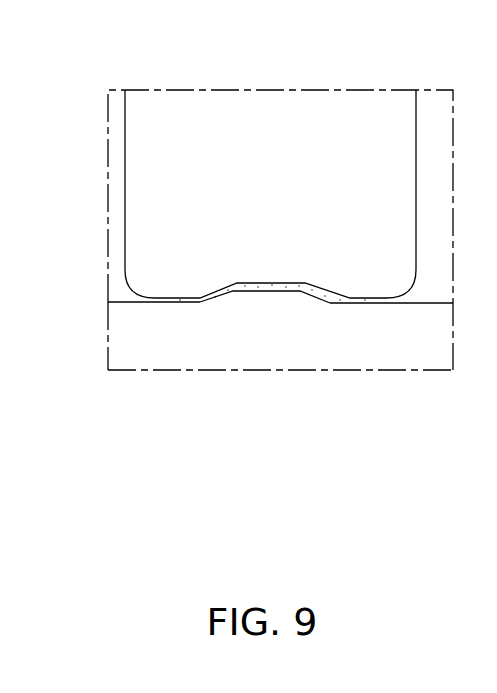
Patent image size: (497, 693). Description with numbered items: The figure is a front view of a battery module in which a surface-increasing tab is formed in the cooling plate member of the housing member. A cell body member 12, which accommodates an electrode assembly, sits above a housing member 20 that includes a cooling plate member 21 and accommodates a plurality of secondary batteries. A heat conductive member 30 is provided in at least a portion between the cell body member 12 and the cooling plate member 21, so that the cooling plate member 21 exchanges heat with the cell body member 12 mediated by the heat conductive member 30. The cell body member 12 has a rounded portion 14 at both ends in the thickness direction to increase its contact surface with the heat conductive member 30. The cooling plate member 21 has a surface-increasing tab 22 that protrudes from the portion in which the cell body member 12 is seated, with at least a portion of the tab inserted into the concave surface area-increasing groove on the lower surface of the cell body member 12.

The cell body member 12 is at (108, 168).
The rounded portion 14 is at (245, 289).
The heat conductive member 30 is at (297, 283).
The housing member 20 is at (280, 392).
The cooling plate member 21 is at (418, 347).
The surface-increasing tab 22 is at (266, 288).